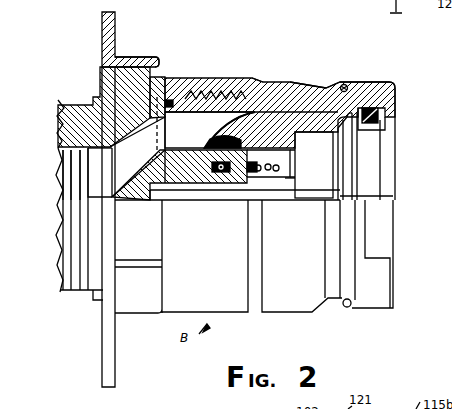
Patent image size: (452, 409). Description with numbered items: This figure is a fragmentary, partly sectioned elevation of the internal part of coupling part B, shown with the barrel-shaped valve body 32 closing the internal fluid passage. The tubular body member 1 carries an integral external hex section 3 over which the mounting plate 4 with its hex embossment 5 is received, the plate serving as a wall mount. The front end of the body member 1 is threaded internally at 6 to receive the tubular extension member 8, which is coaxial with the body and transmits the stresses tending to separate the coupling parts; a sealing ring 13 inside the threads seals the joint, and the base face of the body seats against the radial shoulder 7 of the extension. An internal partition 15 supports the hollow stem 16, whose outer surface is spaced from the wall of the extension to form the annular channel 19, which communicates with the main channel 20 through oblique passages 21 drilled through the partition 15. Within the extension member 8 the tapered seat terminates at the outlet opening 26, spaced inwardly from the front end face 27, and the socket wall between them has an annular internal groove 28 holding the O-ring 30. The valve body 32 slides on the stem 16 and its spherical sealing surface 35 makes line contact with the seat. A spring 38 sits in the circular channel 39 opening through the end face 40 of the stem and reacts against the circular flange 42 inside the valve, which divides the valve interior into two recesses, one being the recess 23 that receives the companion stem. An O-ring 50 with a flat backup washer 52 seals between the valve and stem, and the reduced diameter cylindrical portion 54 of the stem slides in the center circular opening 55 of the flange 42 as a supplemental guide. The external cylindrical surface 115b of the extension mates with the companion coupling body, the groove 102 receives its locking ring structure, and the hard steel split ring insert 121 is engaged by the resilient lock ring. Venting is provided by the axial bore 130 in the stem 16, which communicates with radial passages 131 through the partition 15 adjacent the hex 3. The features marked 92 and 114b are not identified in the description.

The tubular body member 1 is at (96, 97).
The external hex section 3 is at (100, 77).
The plate 4 is at (116, 15).
The hex embossment 5 is at (131, 55).
The internal threads 6 is at (196, 100).
The radial shoulder 7 is at (222, 93).
The tubular extension member 8 is at (298, 83).
The sealing ring 13 is at (168, 78).
The partition 15 is at (118, 174).
The hollow stem 16 is at (190, 173).
The annular channel 19 is at (205, 92).
The main channel 20 is at (82, 187).
The oblique passages 21 is at (123, 158).
The recess 23 is at (314, 165).
The outlet opening 26 is at (344, 178).
The front end face 27 is at (396, 90).
The annular internal groove 28 is at (359, 147).
The O-ring 30 is at (390, 124).
The barrel-shaped valve body 32 is at (283, 125).
The spherical sealing surface 35 is at (358, 155).
The spring 38 is at (244, 194).
The circular channel 39 is at (224, 195).
The end face 40 is at (249, 158).
The circular flange 42 is at (292, 153).
The O-ring 50 is at (203, 140).
The backup washer 52 is at (250, 128).
The reduced diameter cylindrical portion 54 is at (270, 200).
The center circular opening 55 is at (287, 180).
The seal ring 92 is at (389, 117).
The groove 102 is at (329, 90).
The nut portion 114b is at (262, 78).
The external cylindrical surface 115b is at (370, 78).
The split ring insert 121 is at (344, 84).
The axial bore 130 is at (190, 195).
The radial passages 131 is at (152, 140).